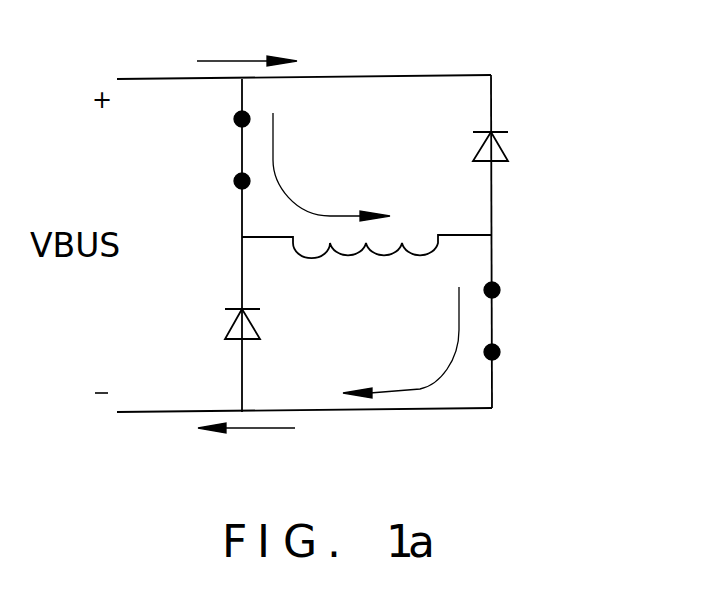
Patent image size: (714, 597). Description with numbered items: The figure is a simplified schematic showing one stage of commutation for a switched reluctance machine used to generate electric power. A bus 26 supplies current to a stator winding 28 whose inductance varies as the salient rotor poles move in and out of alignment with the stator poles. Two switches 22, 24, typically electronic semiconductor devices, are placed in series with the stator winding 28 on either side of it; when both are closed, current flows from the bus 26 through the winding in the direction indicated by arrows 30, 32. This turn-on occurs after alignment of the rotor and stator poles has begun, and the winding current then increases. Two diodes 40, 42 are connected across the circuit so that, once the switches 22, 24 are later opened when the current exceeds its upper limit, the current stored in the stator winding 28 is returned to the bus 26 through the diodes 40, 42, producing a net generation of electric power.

The switch 22 is at (242, 160).
The switch 24 is at (492, 322).
The bus 26 is at (142, 79).
The stator winding 28 is at (420, 257).
The arrow 30 is at (274, 128).
The arrow 32 is at (417, 388).
The diode 40 is at (502, 148).
The diode 42 is at (228, 330).